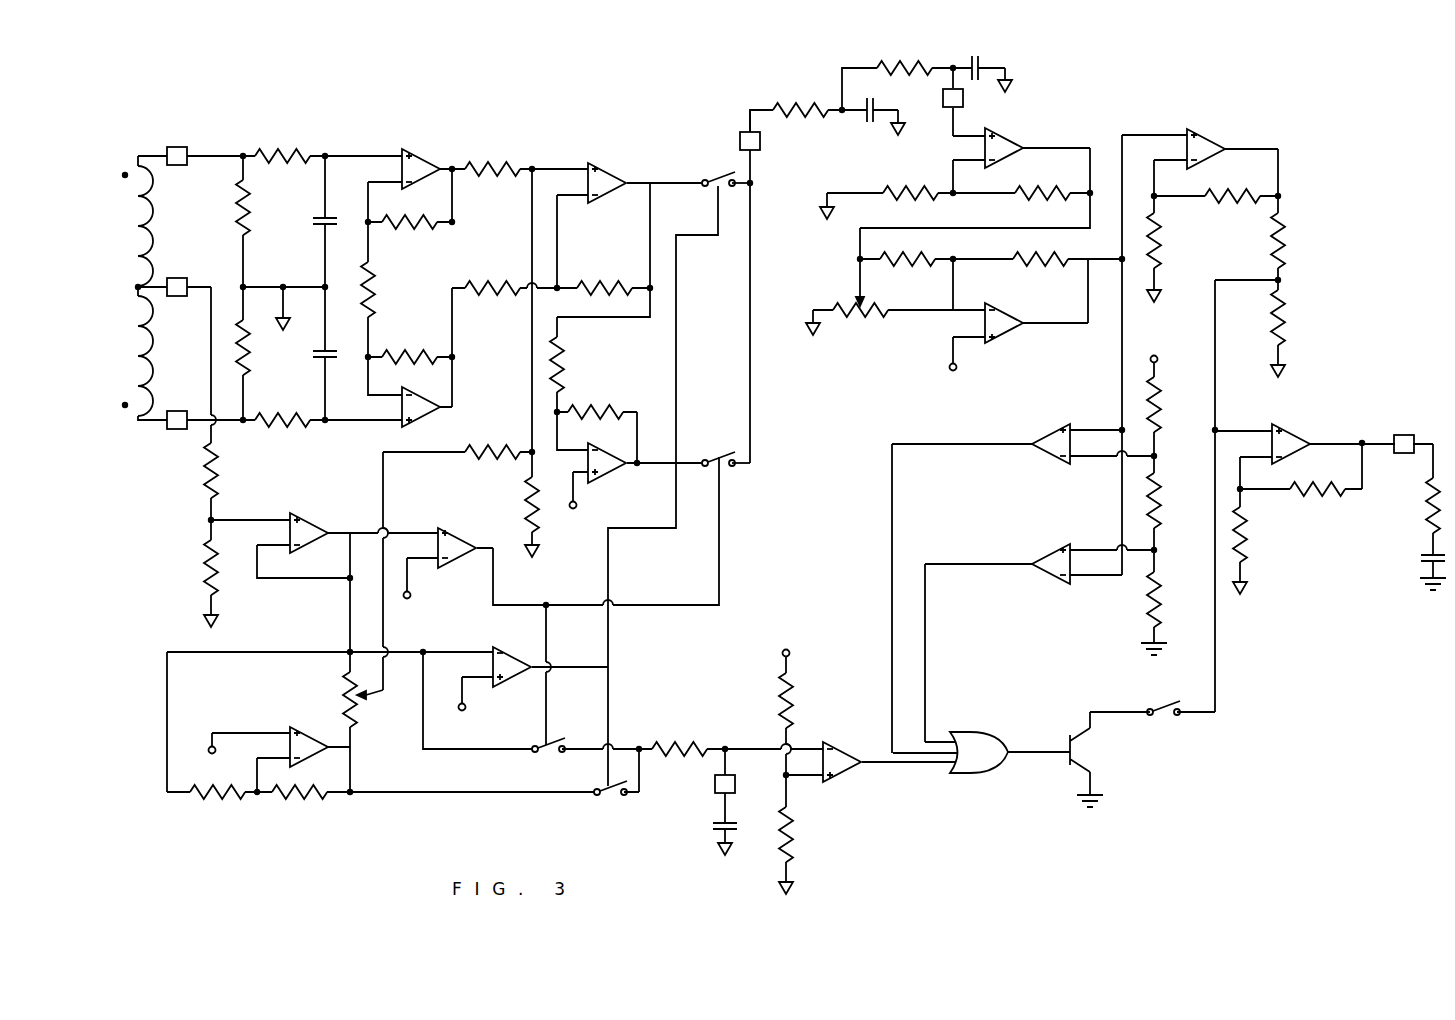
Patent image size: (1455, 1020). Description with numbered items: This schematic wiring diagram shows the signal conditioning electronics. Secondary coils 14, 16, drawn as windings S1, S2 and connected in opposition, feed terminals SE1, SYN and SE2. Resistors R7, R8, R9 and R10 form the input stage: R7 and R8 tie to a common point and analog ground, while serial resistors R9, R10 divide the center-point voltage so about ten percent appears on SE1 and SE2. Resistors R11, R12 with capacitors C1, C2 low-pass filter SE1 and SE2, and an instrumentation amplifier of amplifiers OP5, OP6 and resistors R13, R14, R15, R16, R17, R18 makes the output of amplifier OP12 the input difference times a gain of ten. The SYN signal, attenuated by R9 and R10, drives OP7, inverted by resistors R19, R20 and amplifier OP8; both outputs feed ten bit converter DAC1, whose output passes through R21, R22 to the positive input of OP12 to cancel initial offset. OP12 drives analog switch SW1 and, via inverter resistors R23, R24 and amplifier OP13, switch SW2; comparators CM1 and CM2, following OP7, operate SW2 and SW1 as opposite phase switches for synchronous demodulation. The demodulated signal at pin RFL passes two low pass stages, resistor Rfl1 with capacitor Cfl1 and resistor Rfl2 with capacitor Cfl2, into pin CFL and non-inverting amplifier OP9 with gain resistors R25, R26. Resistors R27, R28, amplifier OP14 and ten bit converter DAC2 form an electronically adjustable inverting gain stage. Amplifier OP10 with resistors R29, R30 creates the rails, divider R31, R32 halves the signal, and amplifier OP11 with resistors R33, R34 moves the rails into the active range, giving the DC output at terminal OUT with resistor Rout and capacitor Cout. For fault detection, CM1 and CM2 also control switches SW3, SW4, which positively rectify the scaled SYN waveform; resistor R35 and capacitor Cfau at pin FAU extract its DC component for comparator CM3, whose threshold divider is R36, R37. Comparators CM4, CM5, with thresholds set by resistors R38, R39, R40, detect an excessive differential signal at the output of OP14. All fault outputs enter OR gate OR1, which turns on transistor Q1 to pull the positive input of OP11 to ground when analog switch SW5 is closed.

The terminal SE1 is at (176, 146).
The terminal SYN is at (177, 277).
The terminal SE2 is at (176, 410).
The secondary winding S1 is at (132, 226).
The secondary winding S2 is at (132, 356).
The secondary coil 14 is at (138, 244).
The secondary coil 16 is at (138, 377).
The resistor R7 is at (229, 221).
The resistor R8 is at (258, 353).
The resistor R9 is at (195, 472).
The resistor R10 is at (191, 573).
The resistor R11 is at (284, 145).
The resistor R12 is at (284, 431).
The resistor R13 is at (388, 289).
The resistor R14 is at (410, 210).
The resistor R15 is at (410, 347).
The resistor R16 is at (492, 160).
The resistor R17 is at (504, 277).
The resistor R18 is at (603, 277).
The resistor R19 is at (212, 803).
The resistor R20 is at (303, 803).
The resistor R21 is at (457, 441).
The resistor R22 is at (513, 504).
The resistor R23 is at (576, 364).
The resistor R24 is at (597, 423).
The resistor R25 is at (886, 192).
The resistor R26 is at (1021, 183).
The resistor R27 is at (909, 251).
The resistor R28 is at (1037, 250).
The resistor R29 is at (1179, 249).
The resistor R30 is at (1216, 186).
The resistor R31 is at (1301, 238).
The resistor R32 is at (1301, 328).
The resistor R33 is at (1260, 541).
The resistor R34 is at (1301, 481).
The resistor R35 is at (682, 737).
The resistor R36 is at (800, 700).
The resistor R37 is at (806, 834).
The resistor R38 is at (1170, 394).
The resistor R39 is at (1175, 503).
The resistor R40 is at (1170, 602).
The capacitor C1 is at (317, 221).
The capacitor C2 is at (334, 353).
The operational amplifier OP5 is at (388, 158).
The operational amplifier OP6 is at (388, 392).
The operational amplifier OP7 is at (324, 536).
The operational amplifier OP8 is at (266, 749).
The operational amplifier OP9 is at (975, 188).
The operational amplifier OP10 is at (1200, 159).
The operational amplifier OP11 is at (1317, 447).
The operational amplifier OP12 is at (618, 216).
The operational amplifier OP13 is at (631, 468).
The operational amplifier OP14 is at (1006, 324).
The comparator CM1 is at (449, 565).
The comparator CM2 is at (522, 677).
The comparator CM3 is at (870, 768).
The comparator CM4 is at (1023, 438).
The comparator CM5 is at (1039, 558).
The digital to analog converter DAC1 is at (340, 699).
The digital to analog converter DAC2 is at (879, 300).
The analog switch SW1 is at (714, 171).
The analog switch SW2 is at (735, 470).
The analog switch SW3 is at (584, 757).
The analog switch SW4 is at (615, 784).
The analog switch SW5 is at (1152, 721).
The filter resistor terminal RFL is at (771, 146).
The resistor Rfl1 is at (796, 107).
The resistor Rfl2 is at (897, 74).
The capacitor Cfl1 is at (871, 121).
The capacitor Cfl2 is at (985, 65).
The pin CFL is at (972, 102).
The fault terminal FAU is at (703, 785).
The capacitor Cfau is at (698, 835).
The OR gate OR1 is at (981, 738).
The transistor Q1 is at (1093, 767).
The output terminal OUT is at (1409, 445).
The output resistor Rout is at (1404, 516).
The output capacitor Cout is at (1407, 569).